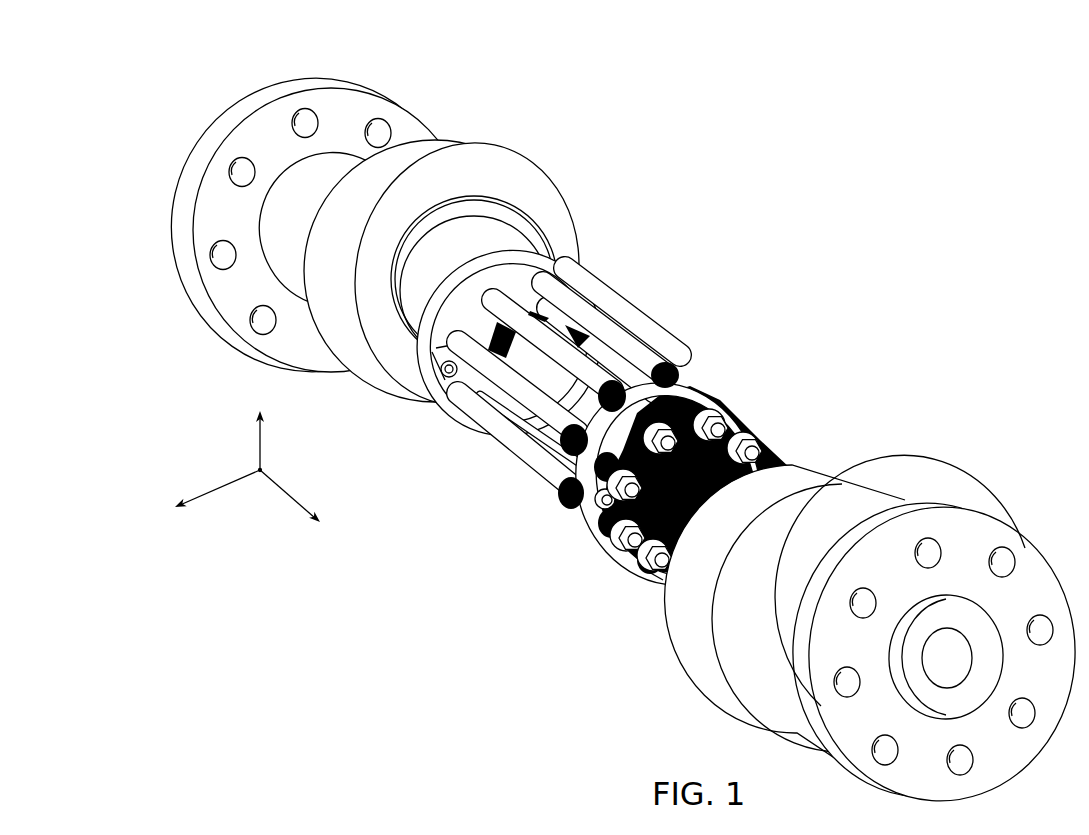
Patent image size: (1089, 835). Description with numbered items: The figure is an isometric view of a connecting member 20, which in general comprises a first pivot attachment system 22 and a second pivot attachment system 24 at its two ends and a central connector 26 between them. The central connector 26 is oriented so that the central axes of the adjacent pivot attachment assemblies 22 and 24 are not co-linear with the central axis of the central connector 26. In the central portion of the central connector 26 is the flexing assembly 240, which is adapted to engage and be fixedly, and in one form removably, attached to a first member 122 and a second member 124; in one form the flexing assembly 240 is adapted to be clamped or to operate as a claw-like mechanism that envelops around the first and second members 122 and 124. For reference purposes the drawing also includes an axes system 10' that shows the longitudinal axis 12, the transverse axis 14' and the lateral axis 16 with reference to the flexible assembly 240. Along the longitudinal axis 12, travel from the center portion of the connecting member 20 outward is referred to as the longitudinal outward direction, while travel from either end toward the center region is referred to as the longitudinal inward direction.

The connecting member 20 is at (346, 594).
The first pivot attachment system 22 is at (456, 110).
The second pivot attachment system 24 is at (918, 476).
The central connector 26 is at (718, 290).
The first member 122 is at (543, 375).
The flexing assembly 240 is at (698, 376).
The second member 124 is at (640, 567).
The axes system 10' is at (206, 428).
The longitudinal axis 12 is at (304, 506).
The transverse axis 14' is at (267, 427).
The lateral axis 16 is at (205, 498).